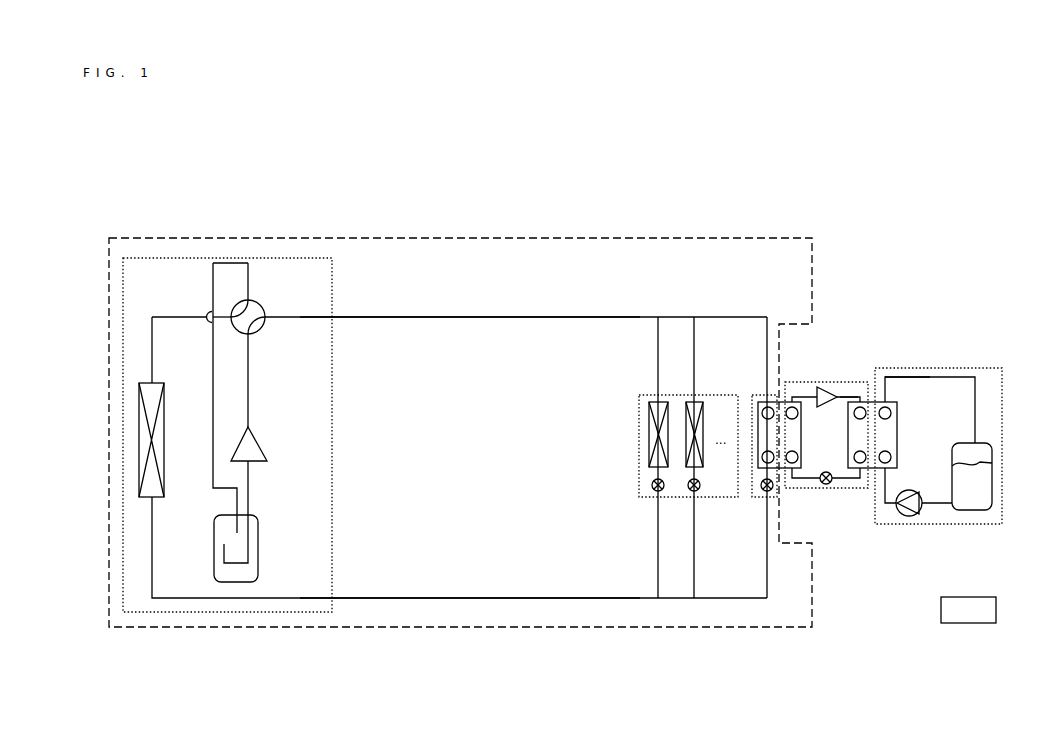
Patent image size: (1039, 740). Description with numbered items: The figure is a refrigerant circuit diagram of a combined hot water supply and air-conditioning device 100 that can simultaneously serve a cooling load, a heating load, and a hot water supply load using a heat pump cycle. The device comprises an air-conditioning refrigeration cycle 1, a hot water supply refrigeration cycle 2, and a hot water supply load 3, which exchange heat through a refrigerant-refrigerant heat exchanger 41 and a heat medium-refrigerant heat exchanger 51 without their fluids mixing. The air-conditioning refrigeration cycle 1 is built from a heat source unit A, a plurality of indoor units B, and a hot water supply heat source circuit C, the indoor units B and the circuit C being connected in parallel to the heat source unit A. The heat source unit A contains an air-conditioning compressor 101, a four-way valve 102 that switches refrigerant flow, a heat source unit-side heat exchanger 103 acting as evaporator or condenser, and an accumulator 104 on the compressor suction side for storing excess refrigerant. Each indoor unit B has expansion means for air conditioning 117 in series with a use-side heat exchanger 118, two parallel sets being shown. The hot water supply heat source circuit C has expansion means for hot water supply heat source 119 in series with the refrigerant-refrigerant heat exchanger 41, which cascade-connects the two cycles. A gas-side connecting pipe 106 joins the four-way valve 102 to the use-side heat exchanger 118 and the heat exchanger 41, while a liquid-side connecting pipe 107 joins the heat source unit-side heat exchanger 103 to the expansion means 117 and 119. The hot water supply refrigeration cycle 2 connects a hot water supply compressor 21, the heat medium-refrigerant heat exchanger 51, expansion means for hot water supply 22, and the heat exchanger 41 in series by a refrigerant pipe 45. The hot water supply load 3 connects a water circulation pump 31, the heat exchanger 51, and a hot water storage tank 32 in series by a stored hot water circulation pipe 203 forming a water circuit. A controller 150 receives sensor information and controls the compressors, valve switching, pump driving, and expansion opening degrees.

The combined hot water supply and air-conditioning device 100 is at (887, 295).
The air-conditioning refrigeration cycle 1 is at (200, 239).
The heat source unit A is at (200, 262).
The indoor units B is at (646, 498).
The hot water supply heat source circuit C is at (754, 498).
The air-conditioning compressor 101 is at (238, 452).
The four-way valve 102 is at (262, 302).
The heat source unit-side heat exchanger 103 is at (167, 400).
The accumulator 104 is at (218, 543).
The gas-side connecting pipe 106 is at (361, 316).
The liquid-side connecting pipe 107 is at (462, 598).
The expansion means for air conditioning 117 is at (666, 483).
The use-side heat exchanger 118 is at (682, 395).
The expansion means for hot water supply heat source 119 is at (778, 492).
The refrigerant-refrigerant heat exchanger 41 is at (795, 448).
The hot water supply refrigeration cycle 2 is at (847, 489).
The hot water supply compressor 21 is at (830, 385).
The expansion means for hot water supply 22 is at (823, 489).
The refrigerant pipe 45 is at (850, 382).
The hot water supply load 3 is at (938, 368).
The stored hot water circulation pipe 203 is at (903, 377).
The heat medium-refrigerant heat exchanger 51 is at (890, 432).
The water circulation pump 31 is at (915, 516).
The hot water storage tank 32 is at (982, 511).
The controller 150 is at (955, 623).